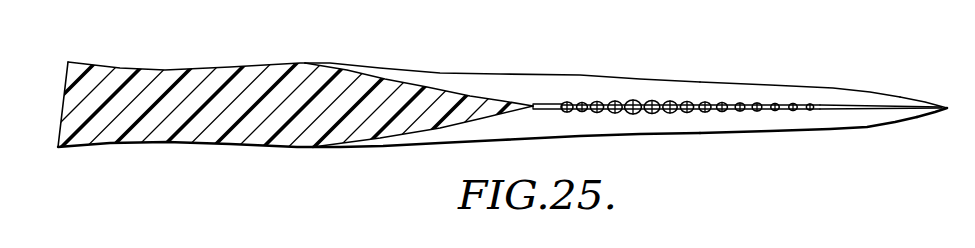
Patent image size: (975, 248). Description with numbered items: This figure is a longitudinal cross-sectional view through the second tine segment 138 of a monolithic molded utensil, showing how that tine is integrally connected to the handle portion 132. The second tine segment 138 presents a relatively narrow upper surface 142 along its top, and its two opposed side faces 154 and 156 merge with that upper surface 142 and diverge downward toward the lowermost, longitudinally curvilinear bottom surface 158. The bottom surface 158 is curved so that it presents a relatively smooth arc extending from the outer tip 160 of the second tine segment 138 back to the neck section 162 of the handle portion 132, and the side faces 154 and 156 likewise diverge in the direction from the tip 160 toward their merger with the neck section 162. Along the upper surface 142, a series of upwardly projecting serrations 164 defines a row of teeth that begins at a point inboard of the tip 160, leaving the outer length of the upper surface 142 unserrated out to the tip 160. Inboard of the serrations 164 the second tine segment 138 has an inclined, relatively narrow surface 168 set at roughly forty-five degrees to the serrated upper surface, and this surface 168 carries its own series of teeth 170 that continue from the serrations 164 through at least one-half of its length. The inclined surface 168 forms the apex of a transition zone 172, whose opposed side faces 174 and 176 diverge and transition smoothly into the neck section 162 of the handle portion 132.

The handle portion 132 is at (83, 58).
The second tine segment 138 is at (652, 138).
The upper surface 142 is at (882, 110).
The side face 154 is at (783, 122).
The side face 156 is at (755, 93).
The bottom surface 158 is at (766, 9).
The outer tip 160 is at (941, 108).
The neck section 162 is at (277, 118).
The serrations 164 is at (717, 112).
The inclined narrow surface 168 is at (552, 104).
The teeth 170 is at (588, 101).
The transition zone 172 is at (397, 73).
The side face of transition zone 174 is at (448, 92).
The side face of transition zone 176 is at (423, 132).